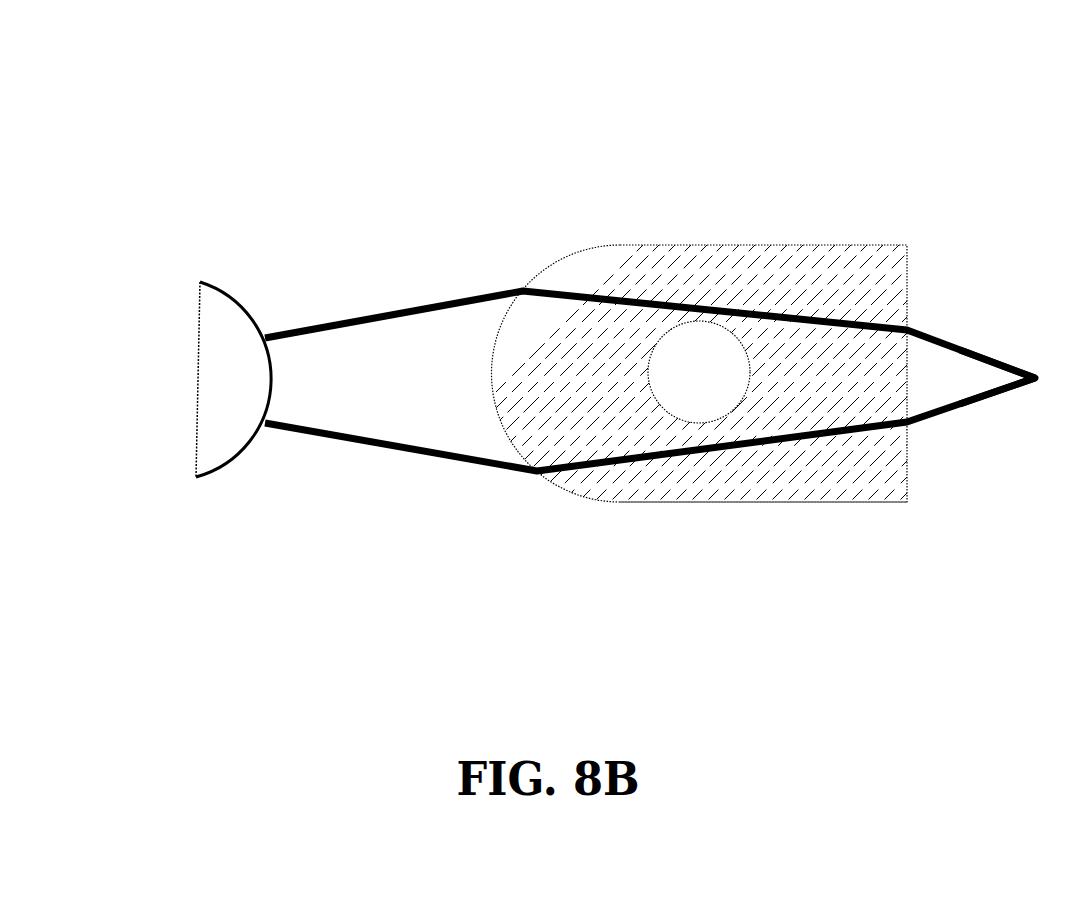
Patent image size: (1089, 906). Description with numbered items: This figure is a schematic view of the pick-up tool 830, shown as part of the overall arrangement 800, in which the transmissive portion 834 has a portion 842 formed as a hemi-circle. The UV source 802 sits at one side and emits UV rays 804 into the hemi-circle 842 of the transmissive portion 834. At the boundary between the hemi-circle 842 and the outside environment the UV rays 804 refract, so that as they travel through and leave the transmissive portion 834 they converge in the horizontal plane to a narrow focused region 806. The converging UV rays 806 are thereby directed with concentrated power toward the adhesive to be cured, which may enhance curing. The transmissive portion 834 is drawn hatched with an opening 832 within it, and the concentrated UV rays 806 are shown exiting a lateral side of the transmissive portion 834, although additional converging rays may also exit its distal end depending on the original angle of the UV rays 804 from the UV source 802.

The optical assembly 800 is at (154, 129).
The UV source 802 is at (188, 294).
The UV rays 804 is at (468, 298).
The narrow focused region 806 is at (1038, 375).
The pick-up tool 830 is at (756, 208).
The aperture / hole 832 is at (680, 423).
The transmissive portion 834 is at (811, 500).
The hemi-circle 842 is at (568, 253).